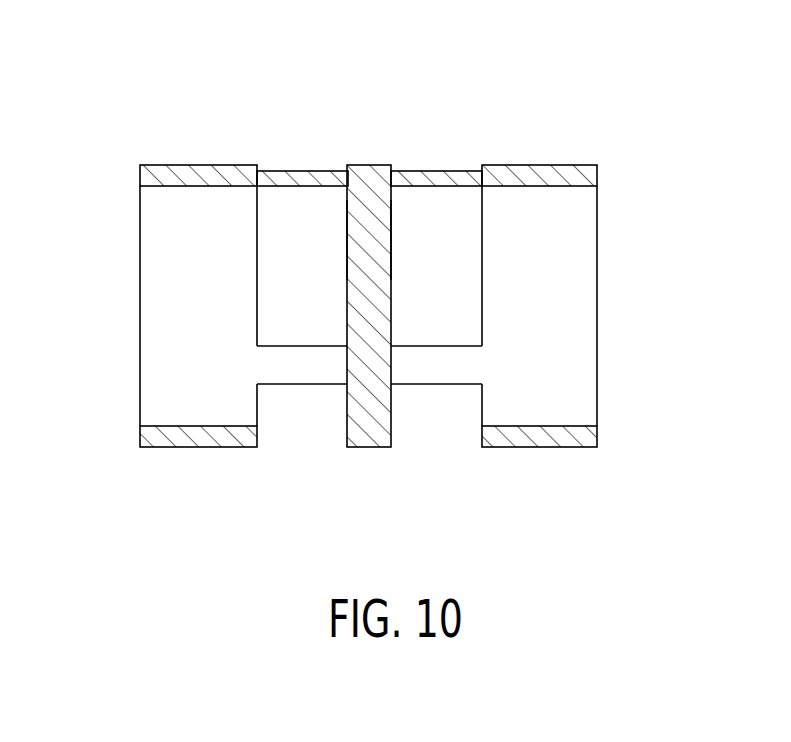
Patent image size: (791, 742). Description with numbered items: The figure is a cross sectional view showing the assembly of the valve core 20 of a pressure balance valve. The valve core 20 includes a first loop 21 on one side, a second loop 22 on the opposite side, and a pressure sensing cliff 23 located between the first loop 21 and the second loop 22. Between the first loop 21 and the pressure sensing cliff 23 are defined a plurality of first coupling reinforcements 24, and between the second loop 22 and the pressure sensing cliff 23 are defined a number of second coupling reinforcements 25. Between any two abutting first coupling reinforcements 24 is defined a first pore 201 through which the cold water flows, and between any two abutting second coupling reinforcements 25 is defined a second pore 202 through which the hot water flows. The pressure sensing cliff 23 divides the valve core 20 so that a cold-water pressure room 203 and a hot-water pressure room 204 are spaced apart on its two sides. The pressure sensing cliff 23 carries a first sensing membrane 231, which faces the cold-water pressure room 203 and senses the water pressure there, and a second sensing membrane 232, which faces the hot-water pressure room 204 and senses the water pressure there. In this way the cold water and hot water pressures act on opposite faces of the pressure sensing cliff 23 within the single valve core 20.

The valve core 20 is at (531, 126).
The first loop 21 is at (182, 176).
The second loop 22 is at (570, 173).
The pressure sensing cliff 23 is at (367, 177).
The first coupling reinforcements 24 is at (283, 178).
The second coupling reinforcements 25 is at (460, 177).
The first sensing membrane 231 is at (347, 240).
The second sensing membrane 232 is at (391, 240).
The first pore 201 is at (303, 305).
The second pore 202 is at (433, 305).
The cold-water pressure room 203 is at (188, 328).
The hot-water pressure room 204 is at (558, 325).